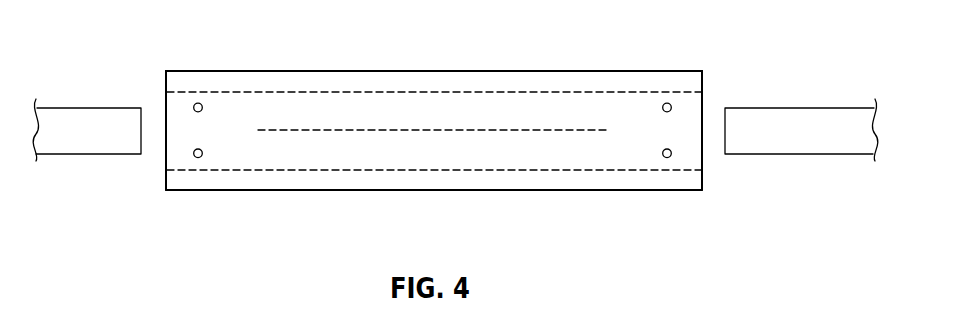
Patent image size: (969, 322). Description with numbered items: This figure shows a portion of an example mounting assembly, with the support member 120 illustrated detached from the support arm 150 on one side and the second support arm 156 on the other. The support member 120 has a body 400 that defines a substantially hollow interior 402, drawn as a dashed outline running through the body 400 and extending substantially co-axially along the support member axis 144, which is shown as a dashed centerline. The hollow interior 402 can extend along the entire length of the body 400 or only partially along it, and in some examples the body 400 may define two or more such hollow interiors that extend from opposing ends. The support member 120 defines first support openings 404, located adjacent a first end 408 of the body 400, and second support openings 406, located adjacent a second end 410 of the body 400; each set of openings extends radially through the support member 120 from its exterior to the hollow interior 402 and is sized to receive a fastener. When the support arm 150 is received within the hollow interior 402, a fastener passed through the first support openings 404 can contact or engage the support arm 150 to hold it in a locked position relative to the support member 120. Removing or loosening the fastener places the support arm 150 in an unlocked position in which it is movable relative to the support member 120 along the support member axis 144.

The support member 120 is at (378, 70).
The body 400 is at (517, 70).
The substantially hollow interior 402 is at (575, 91).
The support member axis 144 is at (375, 130).
The first support openings 404 is at (200, 158).
The second support openings 406 is at (665, 158).
The first end 408 is at (166, 71).
The second end 410 is at (702, 71).
The support arm 150 is at (69, 145).
The second support arm 156 is at (800, 138).